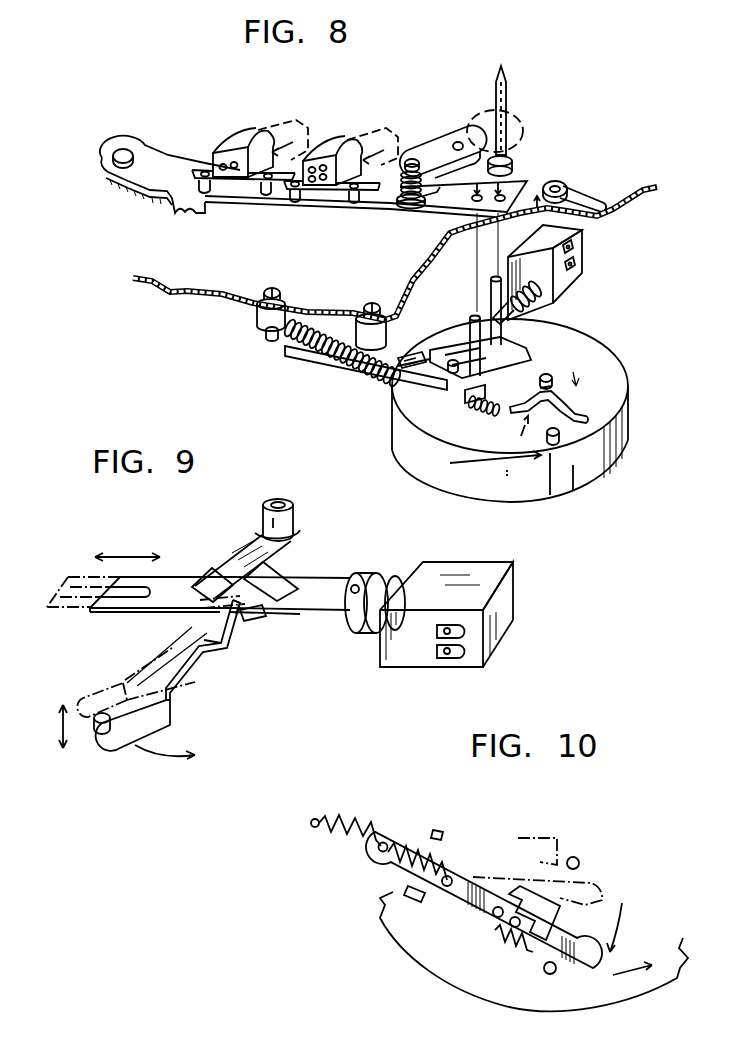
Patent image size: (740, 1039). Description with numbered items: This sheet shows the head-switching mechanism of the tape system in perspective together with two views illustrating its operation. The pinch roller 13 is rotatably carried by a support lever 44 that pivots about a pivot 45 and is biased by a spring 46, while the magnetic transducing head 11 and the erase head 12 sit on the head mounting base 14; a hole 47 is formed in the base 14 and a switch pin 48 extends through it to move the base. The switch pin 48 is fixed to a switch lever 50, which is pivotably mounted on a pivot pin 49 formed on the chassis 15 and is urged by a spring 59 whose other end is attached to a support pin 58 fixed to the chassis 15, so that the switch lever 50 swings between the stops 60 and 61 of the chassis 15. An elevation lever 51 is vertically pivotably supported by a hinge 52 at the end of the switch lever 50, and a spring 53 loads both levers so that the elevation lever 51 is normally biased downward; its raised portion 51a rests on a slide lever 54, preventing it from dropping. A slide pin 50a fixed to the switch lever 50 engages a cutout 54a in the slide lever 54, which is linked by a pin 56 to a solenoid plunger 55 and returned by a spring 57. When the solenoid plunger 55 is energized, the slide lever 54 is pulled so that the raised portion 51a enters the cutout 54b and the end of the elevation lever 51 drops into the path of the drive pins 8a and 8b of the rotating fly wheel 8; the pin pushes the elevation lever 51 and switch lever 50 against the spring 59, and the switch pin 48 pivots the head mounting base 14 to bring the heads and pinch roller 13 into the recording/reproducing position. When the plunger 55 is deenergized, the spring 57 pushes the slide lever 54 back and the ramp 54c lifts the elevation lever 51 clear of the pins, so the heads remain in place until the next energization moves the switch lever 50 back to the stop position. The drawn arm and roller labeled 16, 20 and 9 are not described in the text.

In FIG. 8, the fly wheel 8 is at (583, 480).
In FIG. 10, the fly wheel 8 is at (650, 993).
In FIG. 8, the drive pin 8a is at (551, 384).
In FIG. 10, the drive pin 8a is at (573, 858).
In FIG. 8, the drive pin 8b is at (570, 441).
In FIG. 9, the drive pin 8b is at (97, 727).
In FIG. 10, the drive pin 8b is at (550, 972).
In FIG. 8, the needle 9 is at (507, 95).
In FIG. 8, the magnetic transducing head 11 is at (335, 147).
In FIG. 8, the erase head 12 is at (245, 143).
In FIG. 8, the pinch roller 13 is at (480, 133).
In FIG. 8, the head mounting base 14 is at (286, 198).
In FIG. 8, the chassis 15 is at (177, 293).
In FIG. 8, the arm 16 is at (126, 148).
In FIG. 8, the roller 20 is at (582, 192).
In FIG. 8, the support lever 44 is at (430, 147).
In FIG. 8, the pivot 45 is at (413, 160).
In FIG. 8, the spring 46 is at (400, 196).
In FIG. 8, the hole 47 is at (470, 200).
In FIG. 8, the switch pin 48 is at (473, 313).
In FIG. 10, the switch pin 48 is at (515, 923).
In FIG. 8, the pivot pin 49 is at (356, 346).
In FIG. 9, the pivot pin 49 is at (267, 520).
In FIG. 10, the pivot pin 49 is at (385, 843).
In FIG. 8, the switch lever 50 is at (387, 373).
In FIG. 9, the switch lever 50 is at (240, 560).
In FIG. 10, the switch lever 50 is at (467, 907).
In FIG. 8, the slide pin 50a is at (452, 360).
In FIG. 10, the slide pin 50a is at (498, 913).
In FIG. 8, the elevation lever 51 is at (590, 427).
In FIG. 9, the elevation lever 51 is at (167, 728).
In FIG. 10, the elevation lever 51 is at (582, 960).
In FIG. 8, the raised portion 51a is at (547, 376).
In FIG. 9, the raised portion 51a is at (237, 617).
In FIG. 8, the hinge 52 is at (468, 397).
In FIG. 8, the spring 53 is at (490, 411).
In FIG. 10, the spring 53 is at (518, 953).
In FIG. 8, the slide lever 54 is at (505, 360).
In FIG. 9, the slide lever 54 is at (300, 605).
In FIG. 8, the cutout 54a is at (415, 392).
In FIG. 9, the cutout 54a is at (125, 593).
In FIG. 9, the cutout 54b is at (270, 607).
In FIG. 9, the ramp 54c is at (273, 587).
In FIG. 8, the solenoid plunger 55 is at (573, 257).
In FIG. 9, the solenoid plunger 55 is at (403, 667).
In FIG. 9, the pin 56 is at (355, 585).
In FIG. 9, the spring 57 is at (373, 627).
In FIG. 8, the support pin 58 is at (260, 310).
In FIG. 8, the spring 59 is at (292, 343).
In FIG. 10, the spring 59 is at (358, 840).
In FIG. 10, the stop 60 is at (417, 893).
In FIG. 10, the stop 61 is at (445, 835).